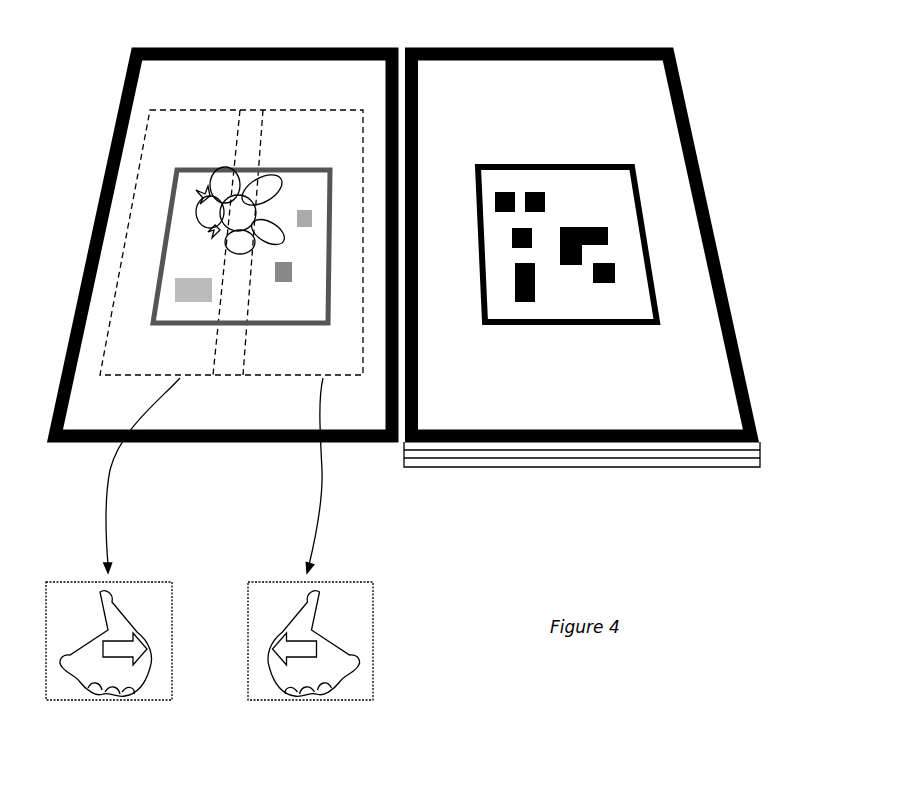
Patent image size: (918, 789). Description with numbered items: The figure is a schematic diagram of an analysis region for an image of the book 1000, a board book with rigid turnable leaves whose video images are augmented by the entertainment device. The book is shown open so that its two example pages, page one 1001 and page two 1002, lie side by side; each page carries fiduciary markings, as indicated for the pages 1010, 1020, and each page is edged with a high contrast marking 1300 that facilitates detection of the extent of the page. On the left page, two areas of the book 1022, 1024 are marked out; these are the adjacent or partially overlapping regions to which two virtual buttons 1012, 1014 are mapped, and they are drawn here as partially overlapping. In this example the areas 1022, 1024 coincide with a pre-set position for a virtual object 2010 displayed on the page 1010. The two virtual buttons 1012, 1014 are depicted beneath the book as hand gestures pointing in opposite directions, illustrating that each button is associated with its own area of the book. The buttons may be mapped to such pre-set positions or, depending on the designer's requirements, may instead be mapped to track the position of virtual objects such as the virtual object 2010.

The book 1000 is at (407, 369).
The page 1 1001 is at (204, 290).
The page 2 1002 is at (605, 238).
The page with fiduciary markings 1010 is at (152, 208).
The virtual button 1012 is at (109, 656).
The virtual button 1014 is at (310, 656).
The page with fiduciary markings 1020 is at (655, 210).
The area of the book 1022 is at (143, 109).
The area of the book 1024 is at (289, 105).
The high contrast marking 1300 is at (697, 88).
The virtual object 2010 is at (270, 177).